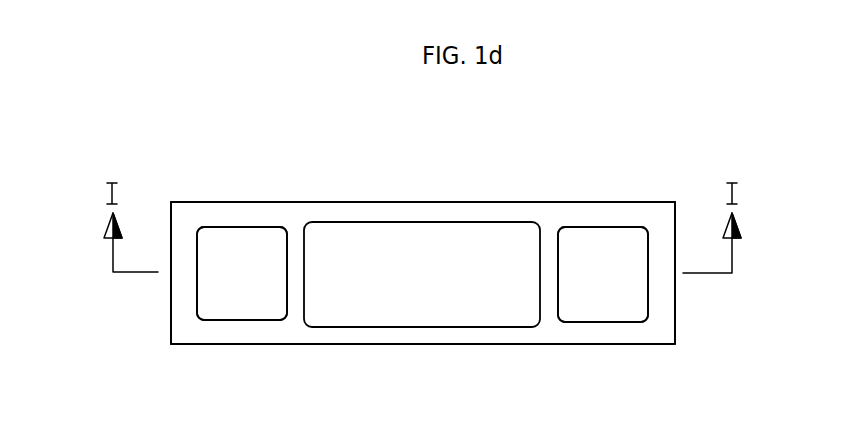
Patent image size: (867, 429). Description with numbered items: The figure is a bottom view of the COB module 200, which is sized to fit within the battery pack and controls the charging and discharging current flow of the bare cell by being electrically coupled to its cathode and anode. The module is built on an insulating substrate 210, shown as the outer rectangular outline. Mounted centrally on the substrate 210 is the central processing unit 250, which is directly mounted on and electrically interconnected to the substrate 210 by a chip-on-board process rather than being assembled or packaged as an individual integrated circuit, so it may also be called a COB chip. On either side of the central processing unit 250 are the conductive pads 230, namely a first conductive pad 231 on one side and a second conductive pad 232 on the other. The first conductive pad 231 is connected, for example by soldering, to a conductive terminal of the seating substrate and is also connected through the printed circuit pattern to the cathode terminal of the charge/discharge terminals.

The COB module 200 is at (206, 148).
The insulating substrate 210 is at (608, 217).
The conductive pads 230 is at (193, 298).
The first conductive pad 231 is at (243, 310).
The second conductive pad 232 is at (600, 310).
The central processing unit 250 is at (415, 217).